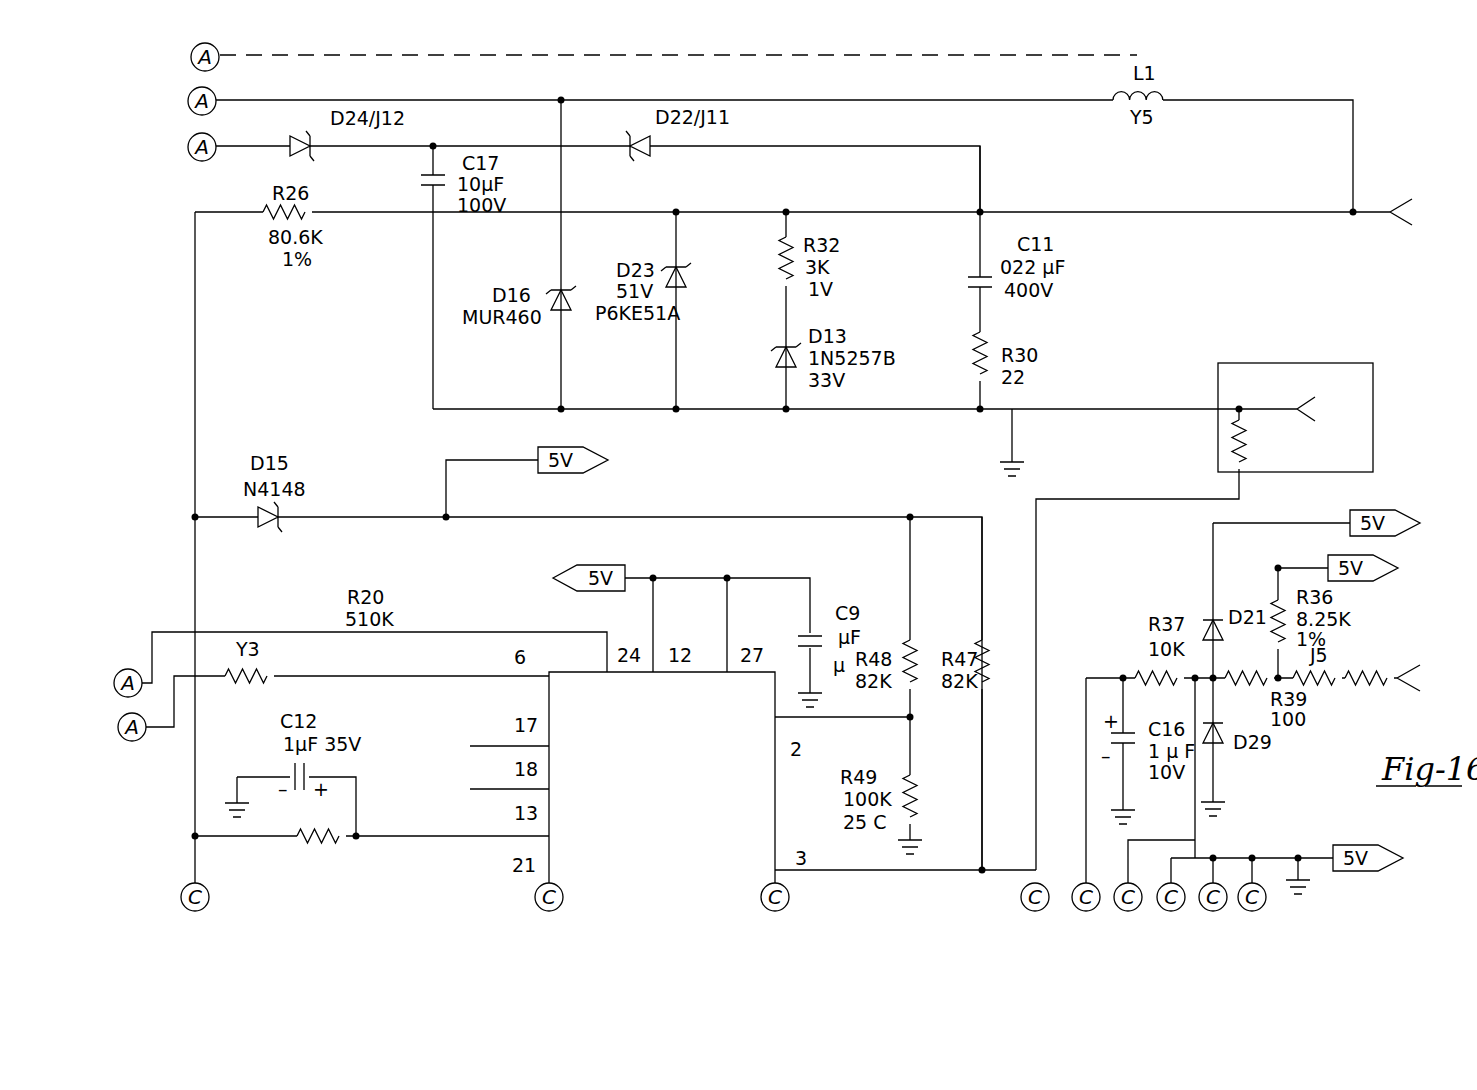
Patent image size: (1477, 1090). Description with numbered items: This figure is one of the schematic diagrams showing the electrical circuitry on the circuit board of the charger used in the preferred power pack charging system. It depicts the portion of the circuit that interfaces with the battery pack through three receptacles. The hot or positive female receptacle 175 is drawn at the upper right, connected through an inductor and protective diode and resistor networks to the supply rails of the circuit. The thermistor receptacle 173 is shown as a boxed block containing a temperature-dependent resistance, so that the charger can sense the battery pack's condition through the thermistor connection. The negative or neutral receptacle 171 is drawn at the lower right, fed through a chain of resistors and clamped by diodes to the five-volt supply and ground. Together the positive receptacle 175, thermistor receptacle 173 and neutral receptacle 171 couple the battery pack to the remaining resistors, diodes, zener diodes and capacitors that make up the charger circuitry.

The negative or neutral receptacle 171 is at (1402, 660).
The thermistor receptacle 173 is at (1283, 358).
The hot or positive female receptacle 175 is at (1383, 248).